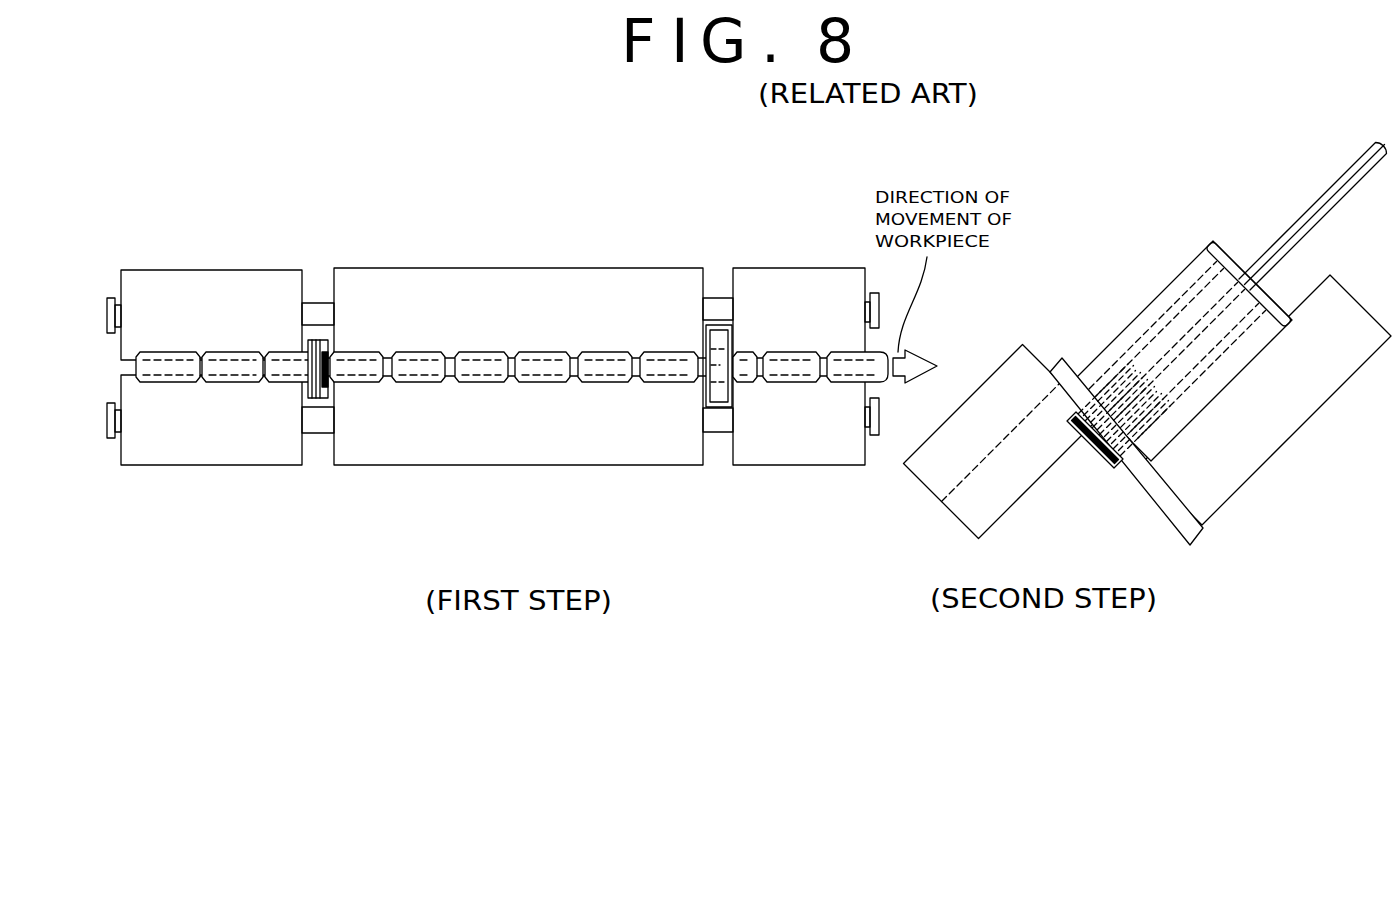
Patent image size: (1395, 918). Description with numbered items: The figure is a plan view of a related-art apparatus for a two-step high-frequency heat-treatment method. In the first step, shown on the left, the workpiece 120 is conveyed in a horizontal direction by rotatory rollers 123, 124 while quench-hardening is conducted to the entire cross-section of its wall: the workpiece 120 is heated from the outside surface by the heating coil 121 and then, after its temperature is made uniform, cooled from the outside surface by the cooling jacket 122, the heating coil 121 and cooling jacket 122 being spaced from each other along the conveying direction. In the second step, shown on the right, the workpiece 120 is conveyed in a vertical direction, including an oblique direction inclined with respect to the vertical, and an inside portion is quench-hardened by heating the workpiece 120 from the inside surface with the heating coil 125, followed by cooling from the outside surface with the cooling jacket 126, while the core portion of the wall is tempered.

The workpiece 120 is at (482, 352).
The heating coil 121 is at (318, 340).
The cooling jacket 122 is at (717, 335).
The rotatory roller 123 is at (186, 270).
The rotatory roller 124 is at (212, 466).
The heating coil 125 is at (1097, 460).
The cooling jacket 126 is at (1043, 362).